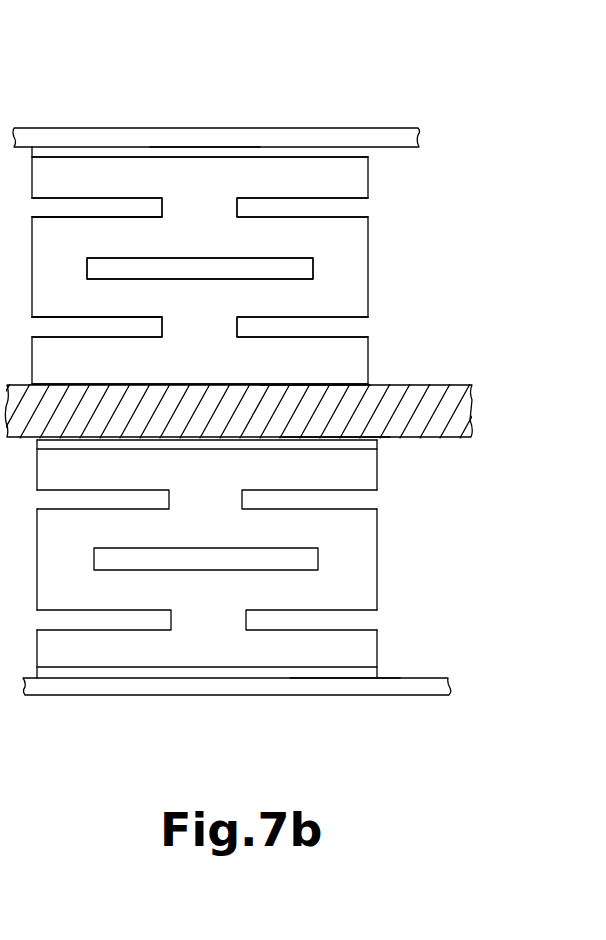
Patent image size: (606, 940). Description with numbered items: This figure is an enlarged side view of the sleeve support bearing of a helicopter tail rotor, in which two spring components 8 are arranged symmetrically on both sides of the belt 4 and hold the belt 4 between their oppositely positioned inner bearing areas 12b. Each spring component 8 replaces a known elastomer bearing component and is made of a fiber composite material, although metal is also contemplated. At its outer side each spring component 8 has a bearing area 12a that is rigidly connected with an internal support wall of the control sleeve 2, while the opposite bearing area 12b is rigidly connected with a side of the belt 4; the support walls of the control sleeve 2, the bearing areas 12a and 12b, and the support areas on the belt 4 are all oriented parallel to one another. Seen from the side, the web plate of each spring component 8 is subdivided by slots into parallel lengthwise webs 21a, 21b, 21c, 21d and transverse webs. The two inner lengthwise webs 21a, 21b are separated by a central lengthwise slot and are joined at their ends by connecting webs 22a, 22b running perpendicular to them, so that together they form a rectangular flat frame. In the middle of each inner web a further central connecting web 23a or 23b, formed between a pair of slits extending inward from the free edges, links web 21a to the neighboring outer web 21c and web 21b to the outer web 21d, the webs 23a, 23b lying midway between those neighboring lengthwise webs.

The control sleeve 2 is at (219, 140).
The belt 4 is at (440, 400).
The spring component 8 is at (385, 270).
The bearing area 12a is at (205, 147).
The bearing area 12b is at (312, 387).
The lengthwise web 21a is at (144, 254).
The lengthwise web 21b is at (142, 318).
The lengthwise web 21c is at (136, 194).
The lengthwise web 21d is at (142, 371).
The connecting web 22a is at (78, 284).
The connecting web 22b is at (360, 290).
The central connecting web 23a is at (217, 222).
The central connecting web 23b is at (217, 341).